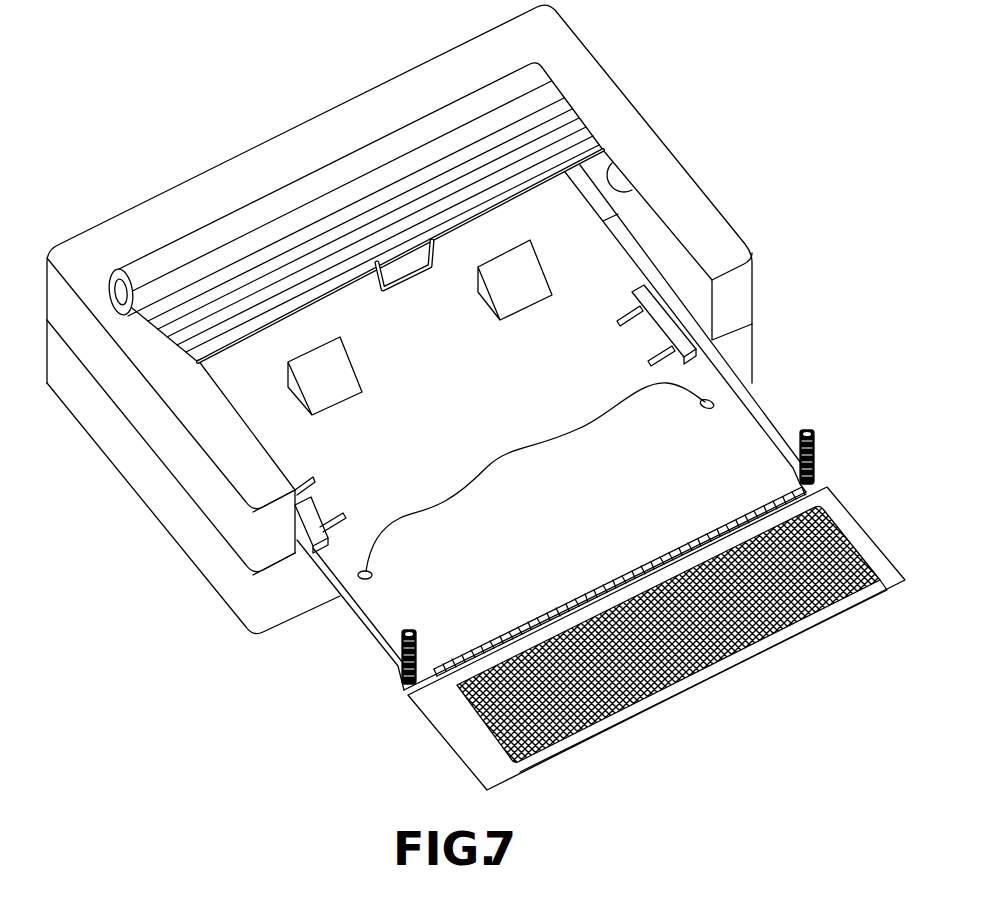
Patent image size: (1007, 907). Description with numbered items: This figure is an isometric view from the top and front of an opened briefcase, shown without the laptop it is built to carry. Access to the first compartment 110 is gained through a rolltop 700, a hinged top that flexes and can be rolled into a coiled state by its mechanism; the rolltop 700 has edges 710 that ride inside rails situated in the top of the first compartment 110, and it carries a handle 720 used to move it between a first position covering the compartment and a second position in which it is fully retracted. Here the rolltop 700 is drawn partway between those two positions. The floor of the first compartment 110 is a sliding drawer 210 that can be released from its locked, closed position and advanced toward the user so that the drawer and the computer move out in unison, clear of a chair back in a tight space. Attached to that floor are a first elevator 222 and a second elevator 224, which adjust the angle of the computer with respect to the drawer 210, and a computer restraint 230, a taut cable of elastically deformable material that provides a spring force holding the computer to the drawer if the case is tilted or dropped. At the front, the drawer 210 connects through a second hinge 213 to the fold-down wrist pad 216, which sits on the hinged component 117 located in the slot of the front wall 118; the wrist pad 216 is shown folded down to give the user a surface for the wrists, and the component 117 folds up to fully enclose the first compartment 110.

The first compartment 110 is at (200, 488).
The hingably attached component 117 is at (443, 735).
The front wall 118 is at (273, 533).
The sliding drawer 210 is at (725, 438).
The second hinge 213 is at (688, 555).
The wrist pad 216 is at (830, 543).
The first elevator 222 is at (338, 365).
The second elevator 224 is at (525, 268).
The computer restraint 230 is at (497, 463).
The rolltop 700 is at (280, 283).
The edges 710 is at (613, 167).
The handle 720 is at (410, 282).